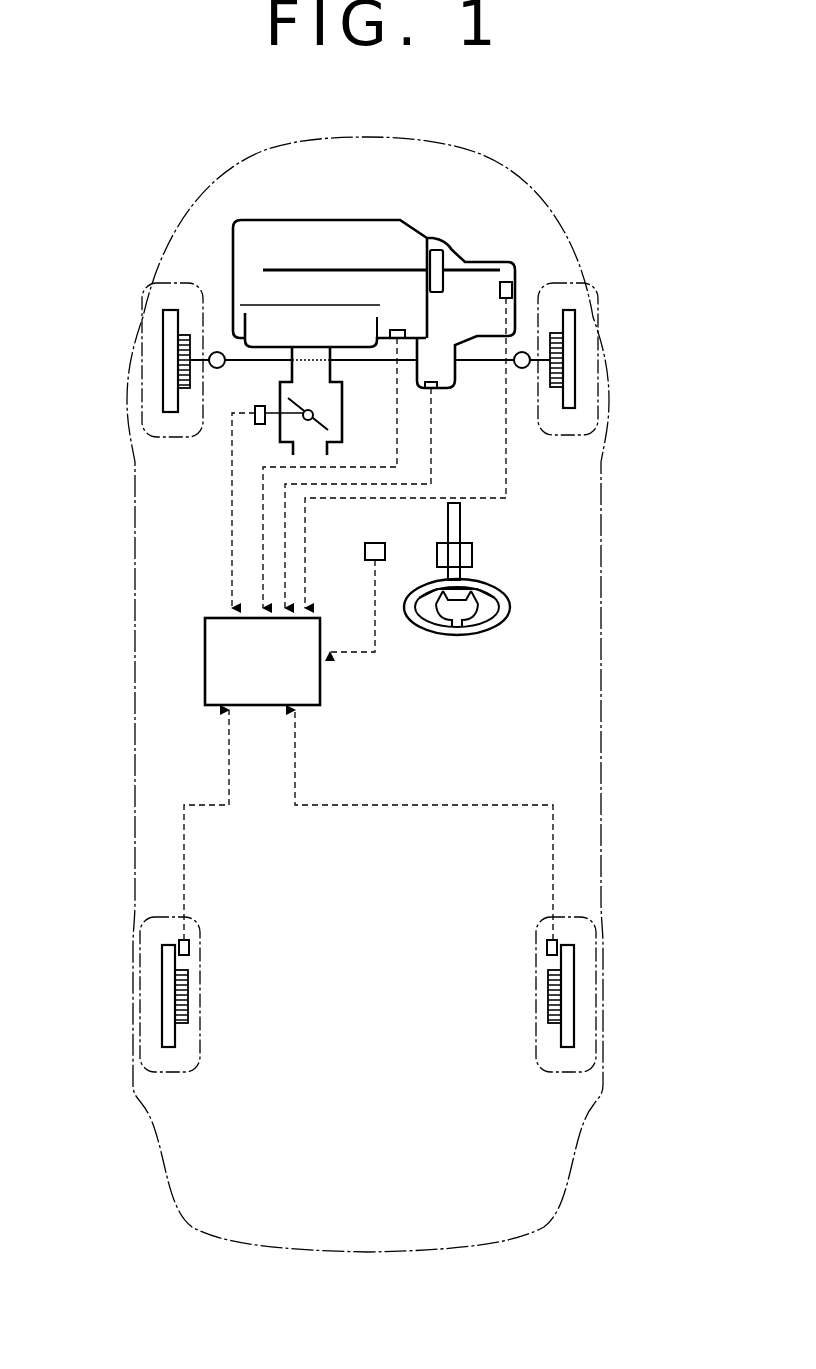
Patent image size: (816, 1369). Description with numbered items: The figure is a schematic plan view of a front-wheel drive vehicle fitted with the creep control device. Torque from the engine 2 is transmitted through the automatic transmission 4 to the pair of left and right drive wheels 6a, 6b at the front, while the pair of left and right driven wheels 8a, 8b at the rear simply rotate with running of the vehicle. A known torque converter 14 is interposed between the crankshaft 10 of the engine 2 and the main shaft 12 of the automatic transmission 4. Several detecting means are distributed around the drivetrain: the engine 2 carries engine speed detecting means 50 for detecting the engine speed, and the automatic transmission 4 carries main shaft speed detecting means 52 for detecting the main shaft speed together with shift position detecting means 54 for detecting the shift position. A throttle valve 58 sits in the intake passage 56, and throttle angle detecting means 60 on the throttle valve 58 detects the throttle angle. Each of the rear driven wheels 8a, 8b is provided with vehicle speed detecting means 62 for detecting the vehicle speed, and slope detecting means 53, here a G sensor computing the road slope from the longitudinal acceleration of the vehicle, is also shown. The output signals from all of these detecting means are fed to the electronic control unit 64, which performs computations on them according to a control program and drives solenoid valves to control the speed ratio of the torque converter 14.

The engine 2 is at (341, 209).
The automatic transmission 4 is at (490, 262).
The left drive wheel 6a is at (170, 363).
The right drive wheel 6b is at (574, 360).
The left driven wheel 8a is at (168, 998).
The right driven wheel 8b is at (575, 998).
The crankshaft 10 is at (277, 270).
The main shaft 12 is at (472, 262).
The torque converter 14 is at (434, 250).
The engine speed detecting means 50 is at (398, 330).
The main shaft speed detecting means 52 is at (500, 290).
The slope detecting means 53 is at (365, 550).
The shift position detecting means 54 is at (432, 390).
The intake passage 56 is at (290, 447).
The throttle valve 58 is at (328, 420).
The throttle angle detecting means 60 is at (255, 408).
The vehicle speed detecting means 62 is at (189, 946).
The electronic control unit 64 is at (322, 700).